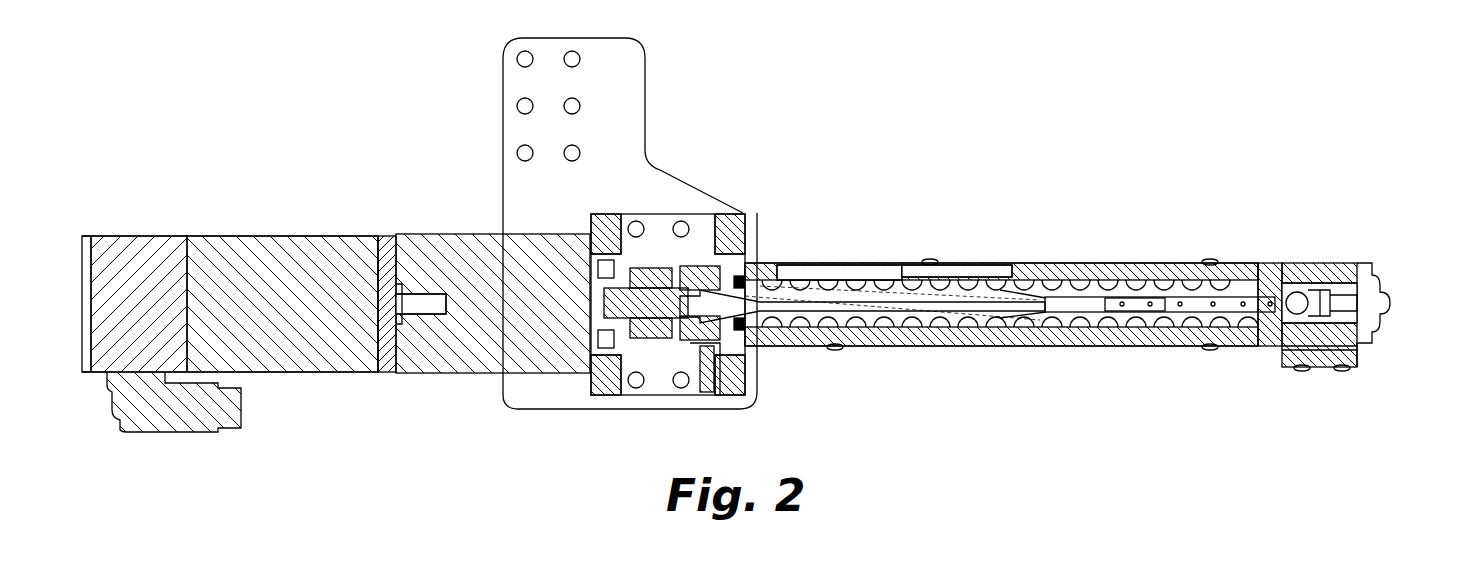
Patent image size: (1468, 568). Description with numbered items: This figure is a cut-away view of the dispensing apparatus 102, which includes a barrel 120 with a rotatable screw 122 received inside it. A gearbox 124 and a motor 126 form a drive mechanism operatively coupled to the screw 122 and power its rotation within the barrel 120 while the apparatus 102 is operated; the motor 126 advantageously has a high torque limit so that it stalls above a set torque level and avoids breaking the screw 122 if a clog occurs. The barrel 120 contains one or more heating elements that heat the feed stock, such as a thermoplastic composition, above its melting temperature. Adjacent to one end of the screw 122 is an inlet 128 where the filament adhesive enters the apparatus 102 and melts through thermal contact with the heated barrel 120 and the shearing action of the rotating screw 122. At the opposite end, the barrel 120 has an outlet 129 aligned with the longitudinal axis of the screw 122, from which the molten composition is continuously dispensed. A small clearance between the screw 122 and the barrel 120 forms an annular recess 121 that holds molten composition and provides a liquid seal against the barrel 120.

The dispensing apparatus 102 is at (1233, 187).
The barrel 120 is at (1072, 266).
The annular recess 121 is at (890, 285).
The rotatable screw 122 is at (962, 290).
The gearbox 124 is at (460, 240).
The motor 126 is at (258, 250).
The inlet 128 is at (789, 287).
The outlet 129 is at (1378, 302).